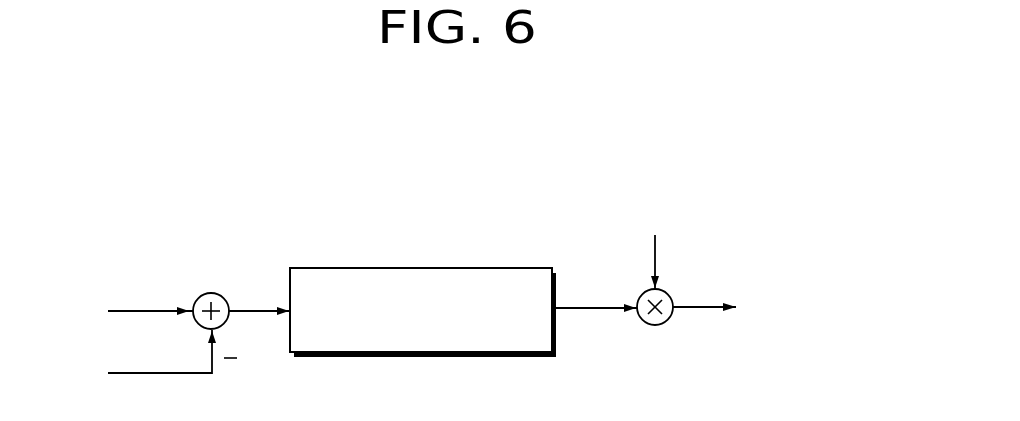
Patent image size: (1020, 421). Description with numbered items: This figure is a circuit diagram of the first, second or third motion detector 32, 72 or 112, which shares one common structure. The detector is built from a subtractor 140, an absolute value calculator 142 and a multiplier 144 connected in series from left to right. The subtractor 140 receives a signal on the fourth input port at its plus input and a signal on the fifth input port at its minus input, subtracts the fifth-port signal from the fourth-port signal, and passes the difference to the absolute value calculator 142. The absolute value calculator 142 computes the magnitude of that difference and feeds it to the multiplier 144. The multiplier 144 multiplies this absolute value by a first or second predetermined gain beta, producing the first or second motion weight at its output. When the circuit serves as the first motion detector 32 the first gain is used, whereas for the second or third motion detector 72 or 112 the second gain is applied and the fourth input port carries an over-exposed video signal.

The first motion detector 32 is at (471, 248).
The second motion detector 72 is at (471, 248).
The third motion detector 112 is at (647, 156).
The subtractor 140 is at (211, 293).
The absolute value calculator 142 is at (424, 267).
The multiplier 144 is at (655, 325).